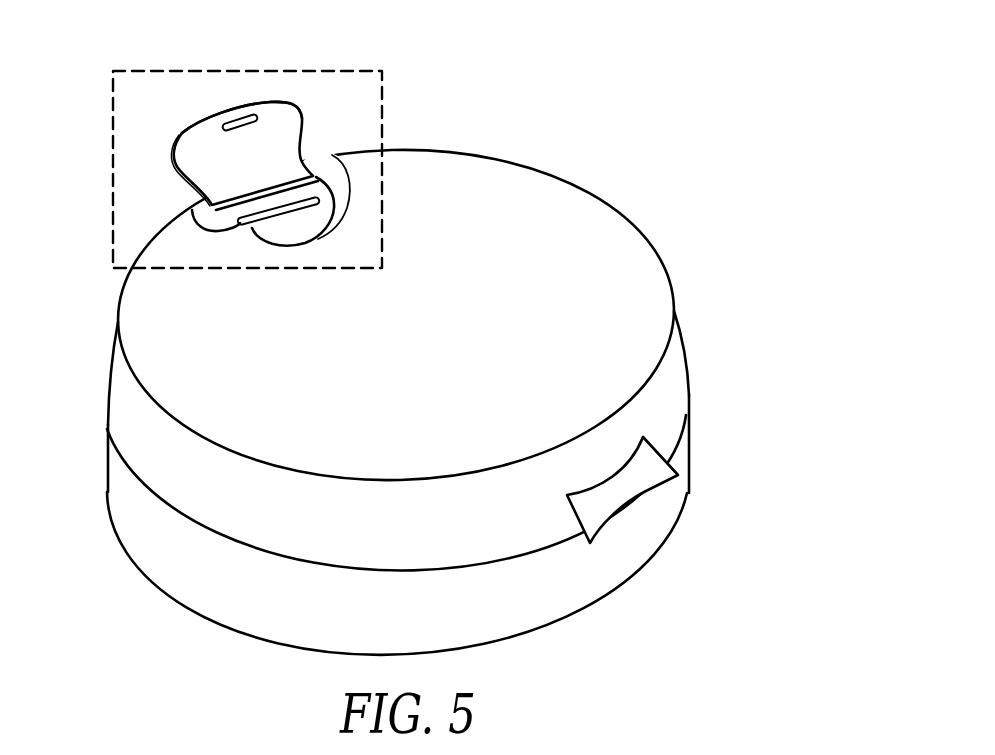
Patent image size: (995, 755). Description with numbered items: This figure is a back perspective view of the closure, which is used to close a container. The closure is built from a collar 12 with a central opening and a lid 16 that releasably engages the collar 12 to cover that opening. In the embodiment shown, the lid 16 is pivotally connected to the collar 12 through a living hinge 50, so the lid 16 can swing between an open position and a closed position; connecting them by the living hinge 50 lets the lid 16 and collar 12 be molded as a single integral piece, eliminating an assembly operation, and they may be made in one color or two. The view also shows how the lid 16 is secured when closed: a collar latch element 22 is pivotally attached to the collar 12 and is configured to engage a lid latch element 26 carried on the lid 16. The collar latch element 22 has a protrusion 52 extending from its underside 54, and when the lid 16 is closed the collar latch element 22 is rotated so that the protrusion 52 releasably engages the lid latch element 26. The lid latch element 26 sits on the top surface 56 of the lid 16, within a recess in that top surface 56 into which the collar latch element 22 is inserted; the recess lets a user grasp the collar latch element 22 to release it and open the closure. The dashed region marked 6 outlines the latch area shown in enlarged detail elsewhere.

The detail region (FIG. 6) 6 is at (110, 212).
The collar 12 is at (680, 451).
The lid 16 is at (677, 337).
The collar latch element 22 is at (193, 153).
The lid latch element 26 is at (313, 180).
The living hinge 50 is at (618, 493).
The protrusion 52 is at (242, 113).
The underside 54 is at (200, 137).
The top surface 56 is at (605, 227).